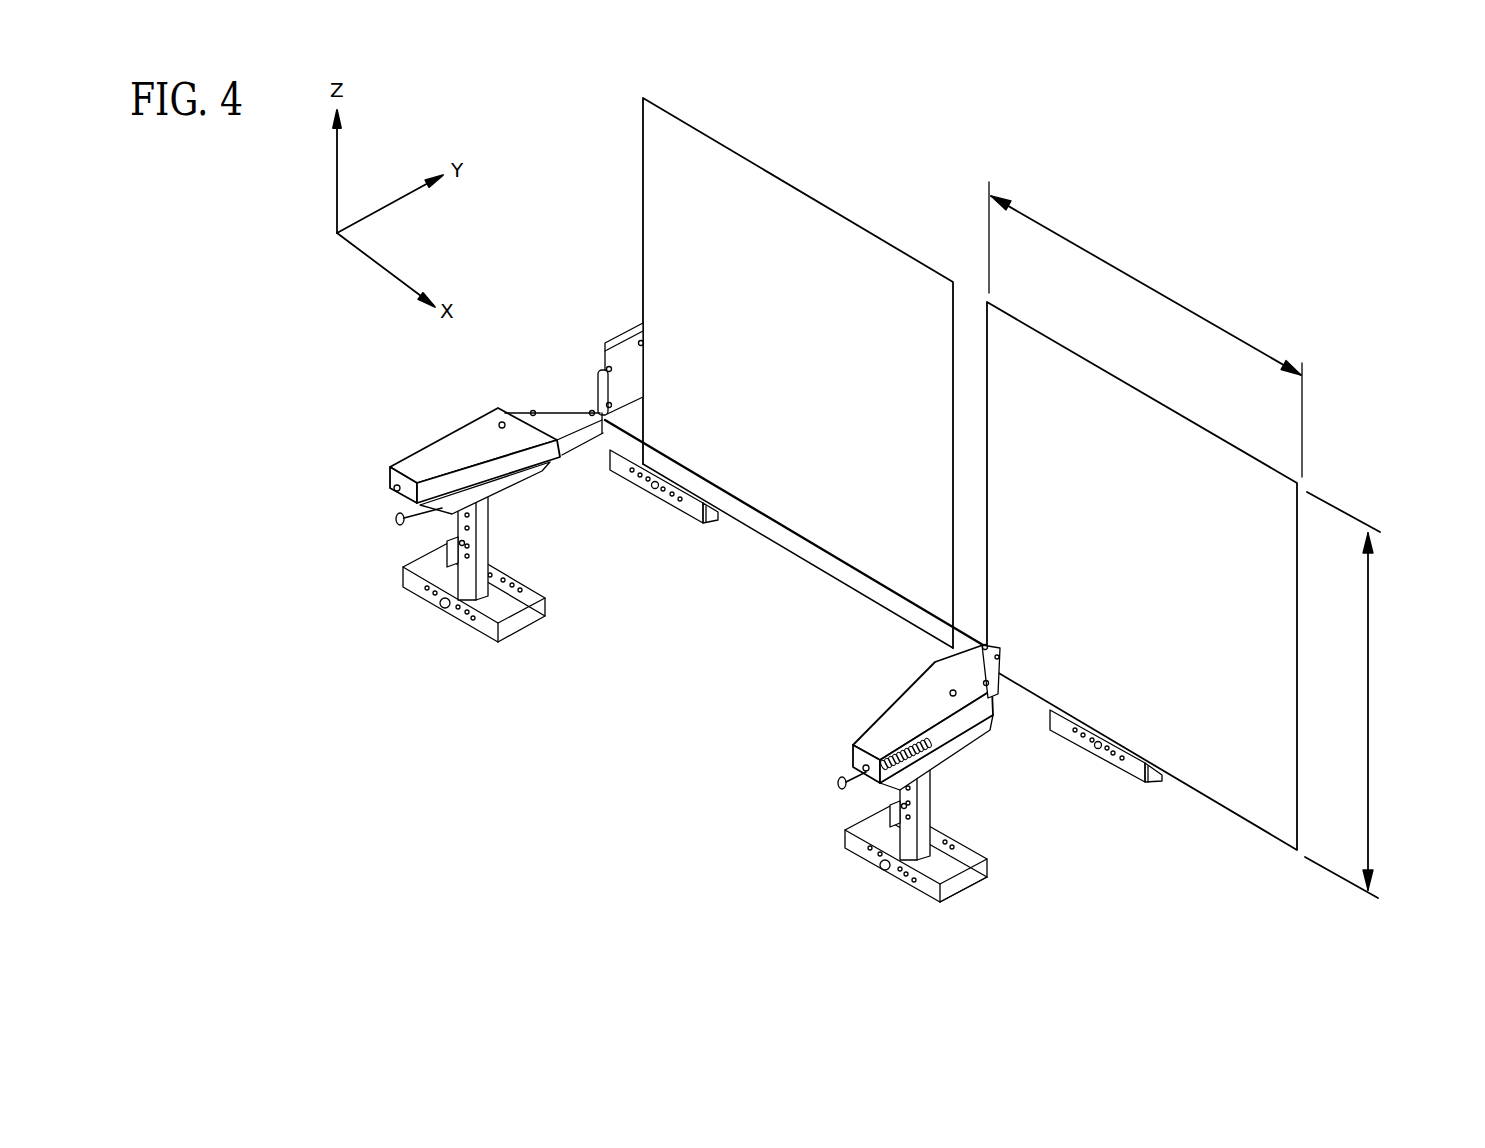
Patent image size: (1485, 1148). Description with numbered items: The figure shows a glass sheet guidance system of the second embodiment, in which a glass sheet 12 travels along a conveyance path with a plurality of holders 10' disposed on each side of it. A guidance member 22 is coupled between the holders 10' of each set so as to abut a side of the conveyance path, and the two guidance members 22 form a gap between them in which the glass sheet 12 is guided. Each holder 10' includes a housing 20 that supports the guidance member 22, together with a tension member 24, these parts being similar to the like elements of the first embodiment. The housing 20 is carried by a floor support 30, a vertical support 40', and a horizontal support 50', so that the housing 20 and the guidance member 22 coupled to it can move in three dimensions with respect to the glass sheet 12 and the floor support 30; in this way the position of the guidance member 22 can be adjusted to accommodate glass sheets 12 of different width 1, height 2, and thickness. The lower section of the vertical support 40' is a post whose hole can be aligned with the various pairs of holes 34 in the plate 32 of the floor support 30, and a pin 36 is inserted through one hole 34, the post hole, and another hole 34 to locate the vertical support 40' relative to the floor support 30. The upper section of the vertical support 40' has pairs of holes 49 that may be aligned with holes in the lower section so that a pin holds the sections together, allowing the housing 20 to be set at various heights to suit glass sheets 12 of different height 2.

The width 1 is at (1133, 273).
The height 2 is at (1368, 672).
The glass sheet 12 is at (1003, 344).
The guidance member 22 is at (602, 397).
The holder 10' is at (642, 588).
The housing 20 is at (921, 702).
The tension member 24 is at (930, 760).
The hole 49 is at (908, 798).
The horizontal support 50' is at (363, 554).
The vertical support 40' is at (762, 673).
The floor support 30 is at (751, 745).
The plate 32 is at (973, 888).
The hole 34 is at (958, 850).
The pin 36 is at (903, 846).